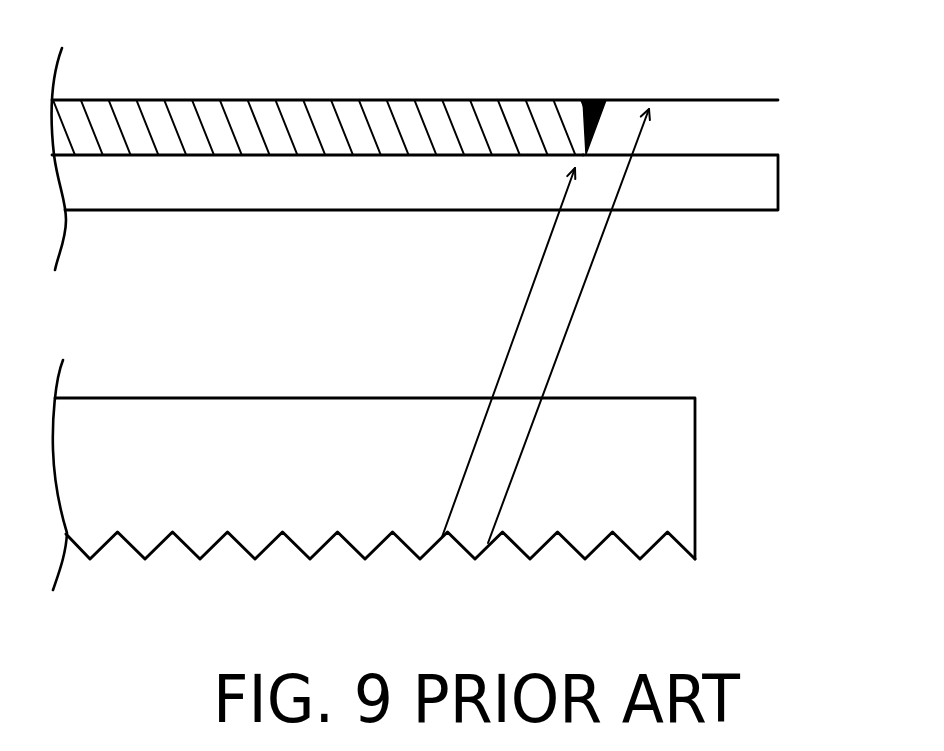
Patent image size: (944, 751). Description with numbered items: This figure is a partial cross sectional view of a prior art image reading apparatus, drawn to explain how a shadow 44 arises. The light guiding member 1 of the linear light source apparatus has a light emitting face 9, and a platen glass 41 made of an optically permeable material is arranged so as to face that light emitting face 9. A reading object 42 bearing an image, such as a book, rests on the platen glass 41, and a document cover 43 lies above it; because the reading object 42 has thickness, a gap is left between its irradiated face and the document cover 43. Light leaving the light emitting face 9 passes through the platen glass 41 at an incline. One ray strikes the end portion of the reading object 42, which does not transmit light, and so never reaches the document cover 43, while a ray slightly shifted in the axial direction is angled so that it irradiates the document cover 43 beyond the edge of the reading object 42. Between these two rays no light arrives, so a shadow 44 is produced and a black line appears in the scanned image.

The light guiding member 1 is at (257, 535).
The light emitting face 9 is at (230, 397).
The platen glass 41 is at (437, 190).
The reading object 42 is at (333, 117).
The document cover 43 is at (683, 100).
The shadow 44 is at (593, 100).